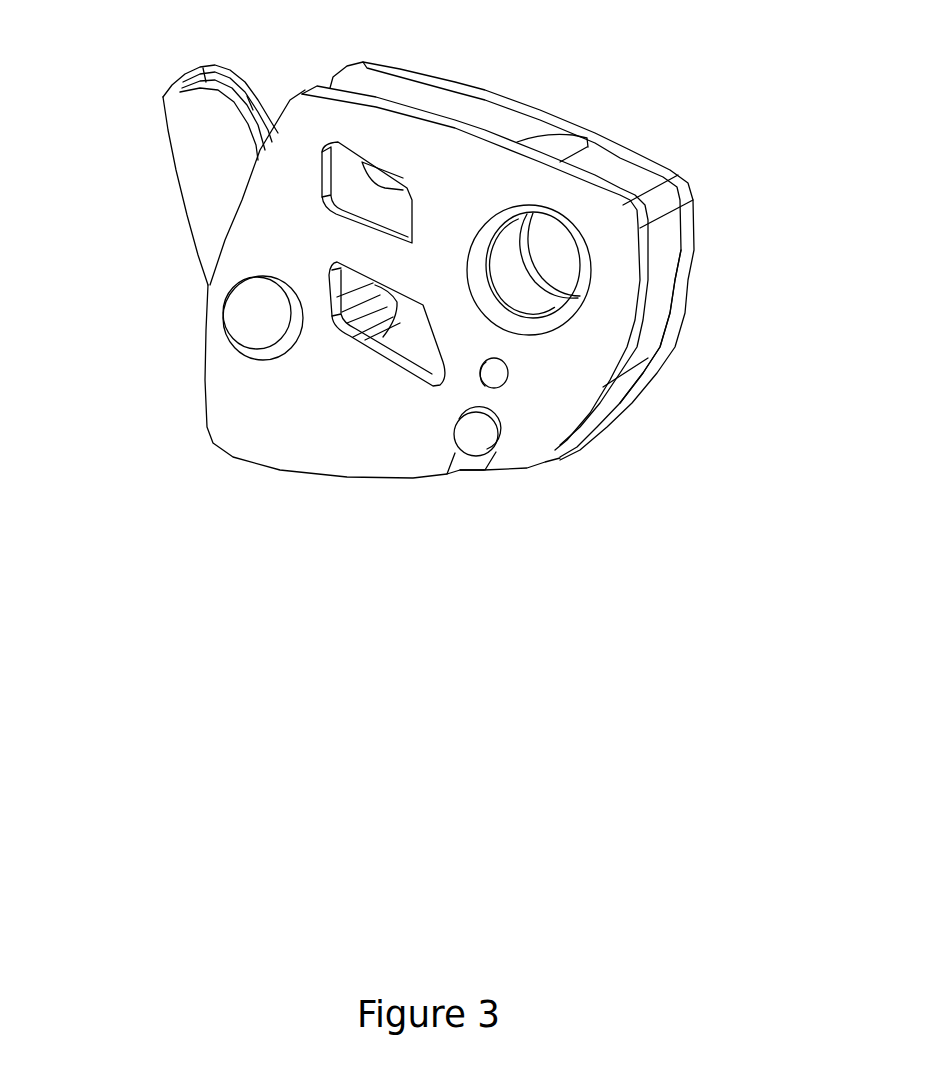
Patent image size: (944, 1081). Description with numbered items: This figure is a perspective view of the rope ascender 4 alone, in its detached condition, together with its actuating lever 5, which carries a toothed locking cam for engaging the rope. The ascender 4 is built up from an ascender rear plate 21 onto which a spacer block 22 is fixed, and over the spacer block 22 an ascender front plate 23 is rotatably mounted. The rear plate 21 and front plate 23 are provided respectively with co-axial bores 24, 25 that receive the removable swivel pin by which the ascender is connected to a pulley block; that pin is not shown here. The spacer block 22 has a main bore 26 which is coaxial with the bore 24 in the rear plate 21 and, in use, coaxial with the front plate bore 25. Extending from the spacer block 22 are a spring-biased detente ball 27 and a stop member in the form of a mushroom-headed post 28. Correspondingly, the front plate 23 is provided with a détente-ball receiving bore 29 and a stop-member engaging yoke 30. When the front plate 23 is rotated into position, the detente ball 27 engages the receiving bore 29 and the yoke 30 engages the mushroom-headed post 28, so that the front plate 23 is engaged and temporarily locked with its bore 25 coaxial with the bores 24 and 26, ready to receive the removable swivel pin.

The ascender 4 is at (628, 70).
The actuating lever 5 is at (165, 95).
The ascender rear plate 21 is at (697, 224).
The spacer block 22 is at (663, 293).
The ascender front plate 23 is at (632, 332).
The bore 24 is at (532, 245).
The bore 25 is at (530, 329).
The main bore 26 is at (508, 240).
The spring-biased detente ball 27 is at (497, 370).
The mushroom-headed post 28 is at (475, 433).
The detente-ball receiving bore 29 is at (483, 378).
The stop-member engaging yoke 30 is at (462, 468).